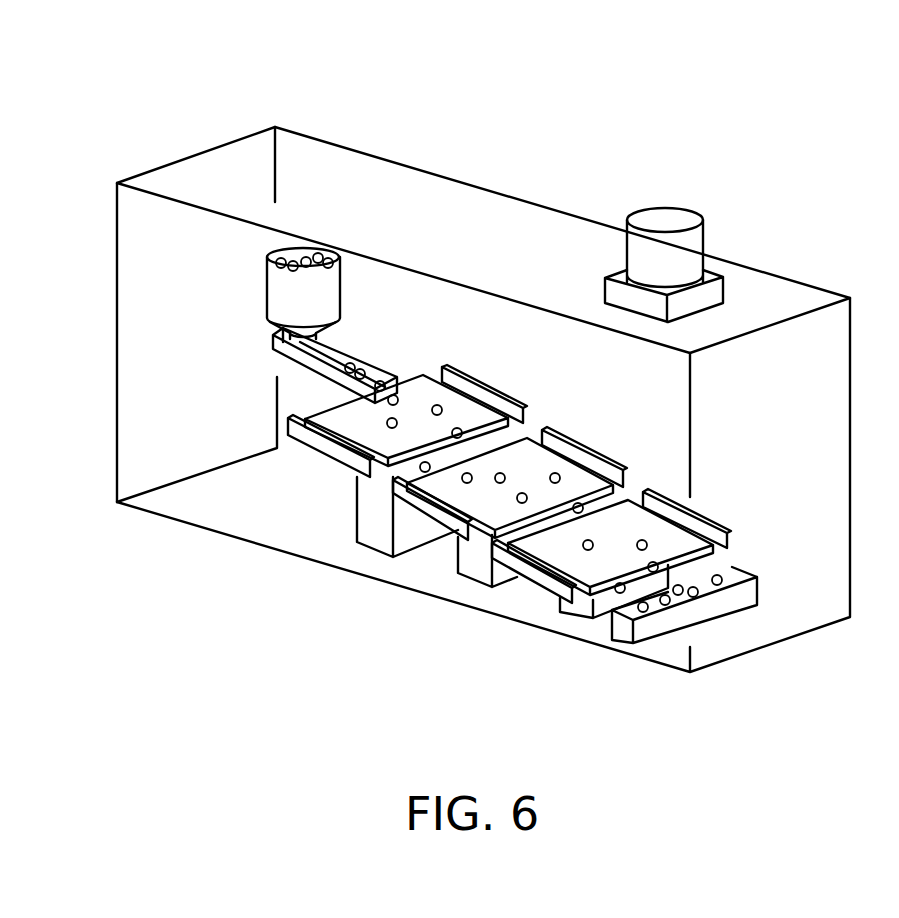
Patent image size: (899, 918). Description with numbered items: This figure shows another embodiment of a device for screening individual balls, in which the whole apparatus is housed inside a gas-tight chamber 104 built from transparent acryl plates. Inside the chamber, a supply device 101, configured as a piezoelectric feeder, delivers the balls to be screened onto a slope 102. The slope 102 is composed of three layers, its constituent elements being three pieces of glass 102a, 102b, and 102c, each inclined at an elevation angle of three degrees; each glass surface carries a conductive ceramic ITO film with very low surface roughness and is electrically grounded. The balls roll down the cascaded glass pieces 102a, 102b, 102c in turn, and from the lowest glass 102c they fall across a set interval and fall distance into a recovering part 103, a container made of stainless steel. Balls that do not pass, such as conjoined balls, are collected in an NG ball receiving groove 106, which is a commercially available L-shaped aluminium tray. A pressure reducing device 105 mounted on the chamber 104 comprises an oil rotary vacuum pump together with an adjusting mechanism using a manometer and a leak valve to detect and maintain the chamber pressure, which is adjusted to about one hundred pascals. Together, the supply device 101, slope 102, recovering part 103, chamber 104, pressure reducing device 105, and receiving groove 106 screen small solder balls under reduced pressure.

The supply device 101 is at (340, 340).
The slope 102 is at (477, 561).
The glass (first slope layer) 102a is at (367, 430).
The glass (second slope layer) 102b is at (483, 497).
The glass (third slope layer) 102c is at (588, 595).
The recovering part 103 is at (673, 615).
The gas-tight chamber 104 is at (323, 160).
The pressure reducing device 105 is at (690, 250).
The NG ball receiving groove 106 is at (590, 460).